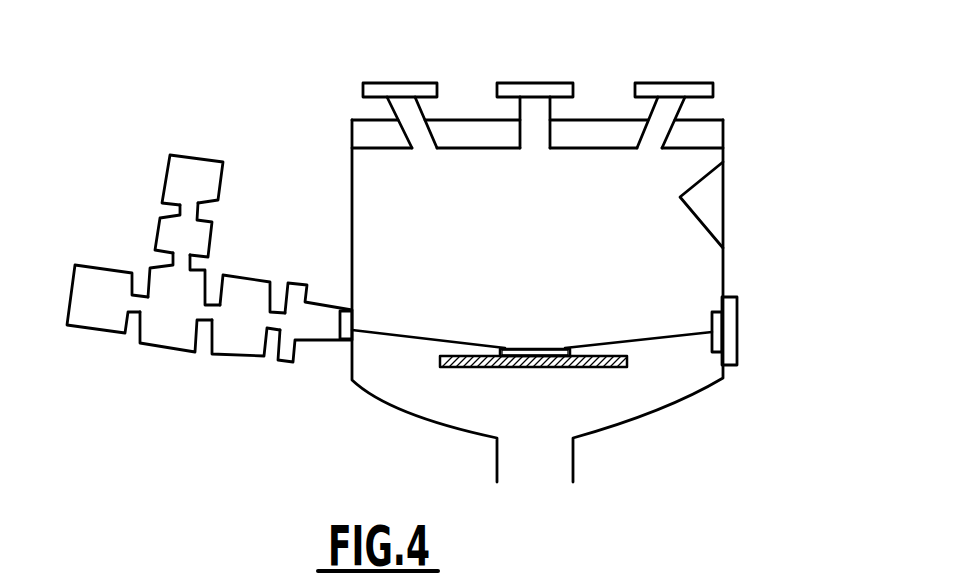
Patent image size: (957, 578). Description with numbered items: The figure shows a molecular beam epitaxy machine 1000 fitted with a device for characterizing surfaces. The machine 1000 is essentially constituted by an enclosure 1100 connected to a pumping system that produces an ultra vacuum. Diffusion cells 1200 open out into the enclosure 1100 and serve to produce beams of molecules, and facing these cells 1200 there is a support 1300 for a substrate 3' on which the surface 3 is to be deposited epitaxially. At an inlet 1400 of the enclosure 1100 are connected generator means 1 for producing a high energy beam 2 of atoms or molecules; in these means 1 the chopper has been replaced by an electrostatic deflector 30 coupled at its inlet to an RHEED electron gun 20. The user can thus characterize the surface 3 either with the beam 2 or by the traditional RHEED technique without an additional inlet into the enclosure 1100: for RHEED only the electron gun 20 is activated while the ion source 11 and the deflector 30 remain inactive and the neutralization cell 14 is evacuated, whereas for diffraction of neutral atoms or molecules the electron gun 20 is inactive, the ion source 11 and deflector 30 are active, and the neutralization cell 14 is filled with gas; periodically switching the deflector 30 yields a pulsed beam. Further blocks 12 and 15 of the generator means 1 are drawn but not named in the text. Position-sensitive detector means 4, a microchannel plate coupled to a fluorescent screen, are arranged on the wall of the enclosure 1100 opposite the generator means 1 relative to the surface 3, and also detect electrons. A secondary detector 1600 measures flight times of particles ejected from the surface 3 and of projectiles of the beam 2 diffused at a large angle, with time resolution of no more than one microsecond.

The means for generating a high energy beam 1 is at (225, 262).
The ion source 11 is at (166, 178).
The second gas source block 12 is at (157, 232).
The neutralization cell 14 is at (233, 357).
The outlet block 15 is at (279, 362).
The RHEED electron gun 20 is at (87, 330).
The electrostatic deflector 30 is at (158, 347).
The molecular beam epitaxy machine 1000 is at (731, 210).
The enclosure 1100 is at (352, 188).
The diffusion cells 1200 is at (633, 86).
The support 1300 is at (587, 370).
The inlet 1400 is at (354, 331).
The secondary detector 1600 is at (710, 190).
The high energy beam 2 is at (407, 335).
The surface 3 is at (546, 317).
The substrate 3' is at (586, 369).
The detector means 4 is at (737, 317).